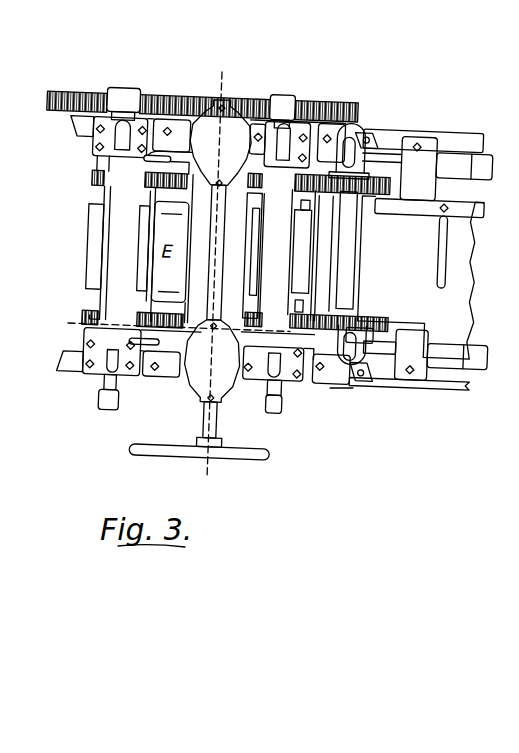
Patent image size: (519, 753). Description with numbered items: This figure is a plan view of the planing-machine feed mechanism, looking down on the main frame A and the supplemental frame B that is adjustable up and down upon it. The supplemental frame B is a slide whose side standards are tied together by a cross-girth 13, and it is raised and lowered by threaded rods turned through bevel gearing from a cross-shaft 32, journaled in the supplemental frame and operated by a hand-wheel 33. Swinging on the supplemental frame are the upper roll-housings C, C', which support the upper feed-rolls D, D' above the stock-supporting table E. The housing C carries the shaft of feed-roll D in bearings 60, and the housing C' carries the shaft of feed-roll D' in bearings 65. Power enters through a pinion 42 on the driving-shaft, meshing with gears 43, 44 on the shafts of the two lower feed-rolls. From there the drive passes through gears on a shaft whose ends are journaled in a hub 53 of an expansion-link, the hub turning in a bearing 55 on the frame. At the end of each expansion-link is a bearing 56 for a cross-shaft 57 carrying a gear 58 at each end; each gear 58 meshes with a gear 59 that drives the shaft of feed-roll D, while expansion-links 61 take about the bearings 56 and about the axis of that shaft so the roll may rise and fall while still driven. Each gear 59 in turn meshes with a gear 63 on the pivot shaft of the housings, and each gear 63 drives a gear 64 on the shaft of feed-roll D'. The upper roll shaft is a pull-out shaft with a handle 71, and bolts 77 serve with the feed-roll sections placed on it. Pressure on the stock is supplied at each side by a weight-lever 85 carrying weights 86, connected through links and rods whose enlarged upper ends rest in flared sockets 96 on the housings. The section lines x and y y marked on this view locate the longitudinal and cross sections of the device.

The cross-girth 13 is at (246, 240).
The cross-shaft 32 is at (219, 300).
The hand-wheel 33 is at (270, 457).
The pinion 42 is at (205, 100).
The gear 43 is at (84, 97).
The gear 44 is at (325, 103).
The hub 53 is at (332, 391).
The bearing 55 is at (358, 130).
The bearing 56 is at (366, 140).
The cross-shaft 57 is at (340, 283).
The gear 58 is at (385, 201).
The gear 59 is at (306, 206).
The bearing 60 is at (298, 135).
The expansion-link 61 is at (305, 172).
The gear 63 is at (178, 196).
The gear 64 is at (92, 178).
The bearing 65 is at (95, 140).
The handle 71 is at (106, 411).
The bolt 77 is at (301, 285).
The weight-lever 85 is at (385, 160).
The weights 86 is at (485, 166).
The socket 96 is at (150, 159).
The main frame A is at (450, 140).
The supplemental frame B is at (216, 251).
The upper roll-housing C is at (275, 258).
The upper feed-roll D is at (310, 252).
The stock-supporting table E is at (420, 278).
The upper feed-roll D' is at (79, 246).
The upper roll-housing C' is at (130, 248).
The section line x is at (172, 320).
The section line y y is at (221, 273).